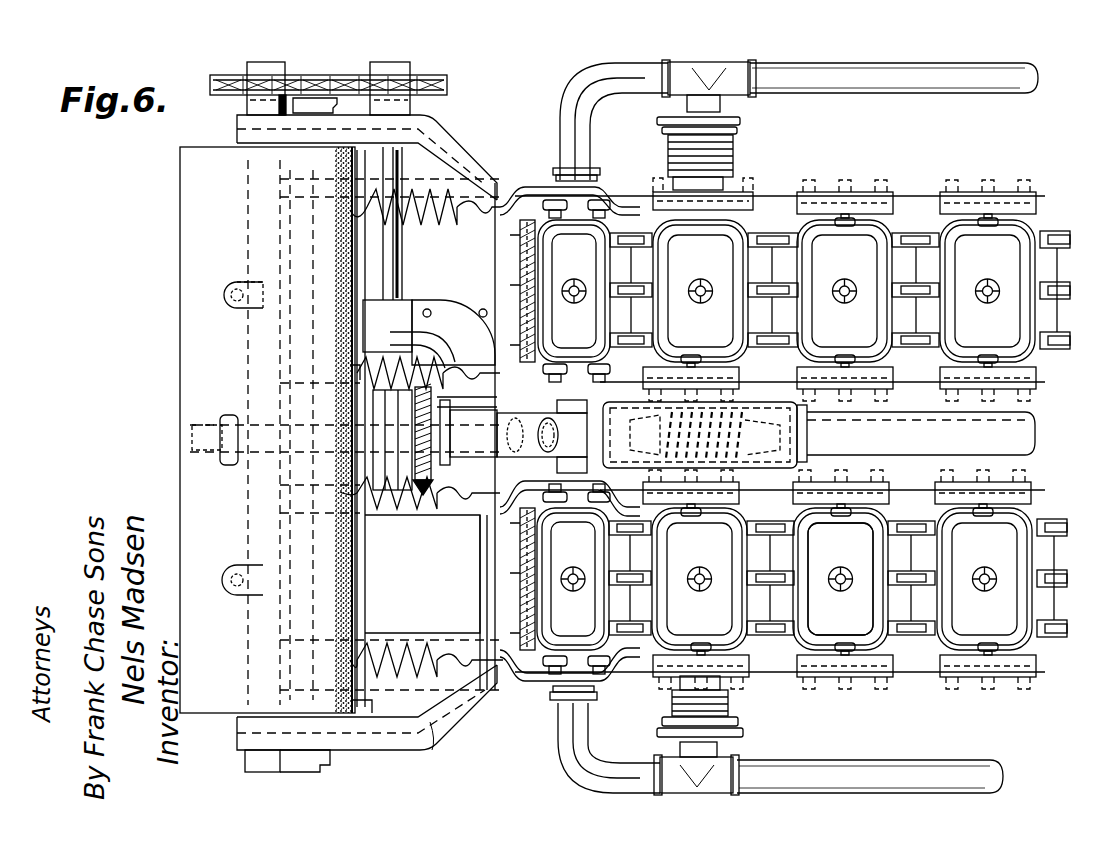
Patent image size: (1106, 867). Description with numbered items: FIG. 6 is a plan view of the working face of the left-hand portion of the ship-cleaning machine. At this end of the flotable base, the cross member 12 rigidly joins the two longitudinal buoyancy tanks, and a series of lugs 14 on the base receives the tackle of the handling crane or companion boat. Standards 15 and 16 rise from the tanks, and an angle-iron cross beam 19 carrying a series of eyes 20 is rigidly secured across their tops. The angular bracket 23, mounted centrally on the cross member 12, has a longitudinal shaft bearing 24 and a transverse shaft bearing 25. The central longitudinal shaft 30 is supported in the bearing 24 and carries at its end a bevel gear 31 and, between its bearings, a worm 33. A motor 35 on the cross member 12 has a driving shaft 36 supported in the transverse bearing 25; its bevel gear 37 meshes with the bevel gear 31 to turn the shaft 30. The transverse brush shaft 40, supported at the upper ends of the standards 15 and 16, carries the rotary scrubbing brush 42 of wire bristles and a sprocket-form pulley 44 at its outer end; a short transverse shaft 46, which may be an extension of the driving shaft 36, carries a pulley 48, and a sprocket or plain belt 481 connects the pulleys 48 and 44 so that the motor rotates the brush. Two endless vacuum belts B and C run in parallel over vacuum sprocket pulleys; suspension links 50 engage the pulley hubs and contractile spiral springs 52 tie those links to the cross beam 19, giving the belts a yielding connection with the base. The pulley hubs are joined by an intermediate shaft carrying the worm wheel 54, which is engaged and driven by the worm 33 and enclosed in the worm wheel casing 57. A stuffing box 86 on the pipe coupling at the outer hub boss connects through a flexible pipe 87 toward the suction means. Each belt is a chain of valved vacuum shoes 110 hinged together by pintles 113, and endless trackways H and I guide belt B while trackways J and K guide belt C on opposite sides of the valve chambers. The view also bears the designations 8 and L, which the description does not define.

The direction arrow 8 is at (908, 380).
The cross member 12 is at (436, 745).
The lugs 14 is at (224, 299).
The standard 15 is at (237, 742).
The standard 16 is at (237, 130).
The cross beam 19 is at (365, 614).
The eyes 20 is at (348, 492).
The angular bracket 23 is at (440, 320).
The longitudinal shaft bearing 24 is at (475, 445).
The transverse shaft bearing 25 is at (405, 300).
The central longitudinal shaft 30 is at (1030, 434).
The bevel gear 31 is at (542, 432).
The worm 33 is at (670, 437).
The motor 35 is at (426, 602).
The driving shaft 36 is at (375, 403).
The bevel gear 37 is at (350, 357).
The transverse brush shaft 40 is at (248, 257).
The rotary scrubbing brush 42 is at (180, 207).
The pulley 44 is at (220, 76).
The short transverse shaft 46 is at (392, 166).
The pulley 48 is at (430, 76).
The sprocket or plain belt 481 is at (340, 64).
The suspension link 50 is at (735, 182).
The contractile spiral spring 52 is at (400, 508).
The worm wheel 54 is at (808, 432).
The worm wheel casing 57 is at (770, 420).
The stuffing box 86 is at (668, 150).
The flexible pipe 87 is at (836, 92).
The valved vacuum shoe 110 is at (803, 435).
The pintle 113 is at (905, 545).
The endless vacuum belt B is at (1084, 574).
The endless vacuum belt C is at (1084, 262).
The trackway H is at (792, 676).
The trackway I is at (830, 491).
The trackway J is at (829, 384).
The trackway K is at (792, 197).
The section L is at (510, 479).